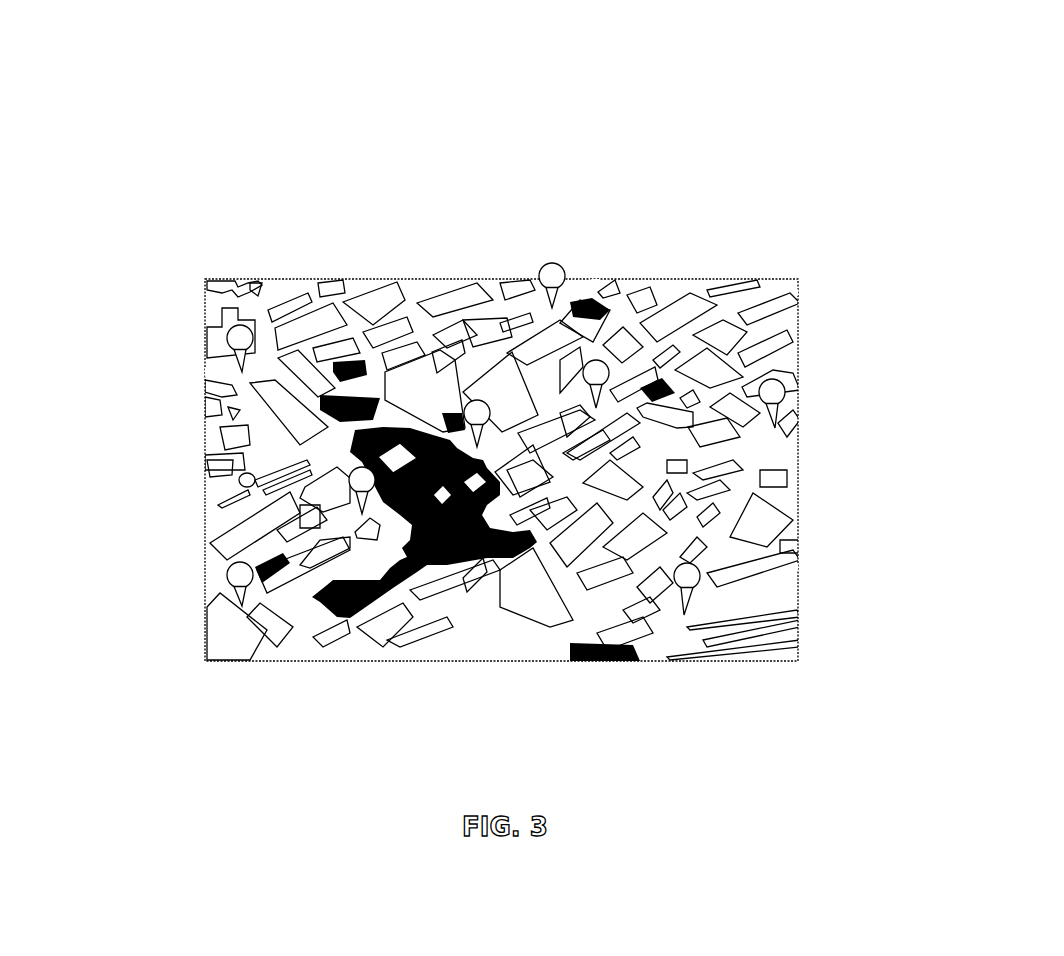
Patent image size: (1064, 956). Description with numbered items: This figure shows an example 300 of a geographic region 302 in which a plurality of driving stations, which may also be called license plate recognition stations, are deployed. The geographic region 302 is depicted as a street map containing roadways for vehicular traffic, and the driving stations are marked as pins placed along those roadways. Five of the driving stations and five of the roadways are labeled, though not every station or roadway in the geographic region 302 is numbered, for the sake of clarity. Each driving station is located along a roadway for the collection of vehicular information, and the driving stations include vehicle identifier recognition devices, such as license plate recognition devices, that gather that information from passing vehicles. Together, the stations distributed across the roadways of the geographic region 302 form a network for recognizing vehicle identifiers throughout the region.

The example environment 300 is at (1032, 50).
The geographic region 302 is at (513, 410).